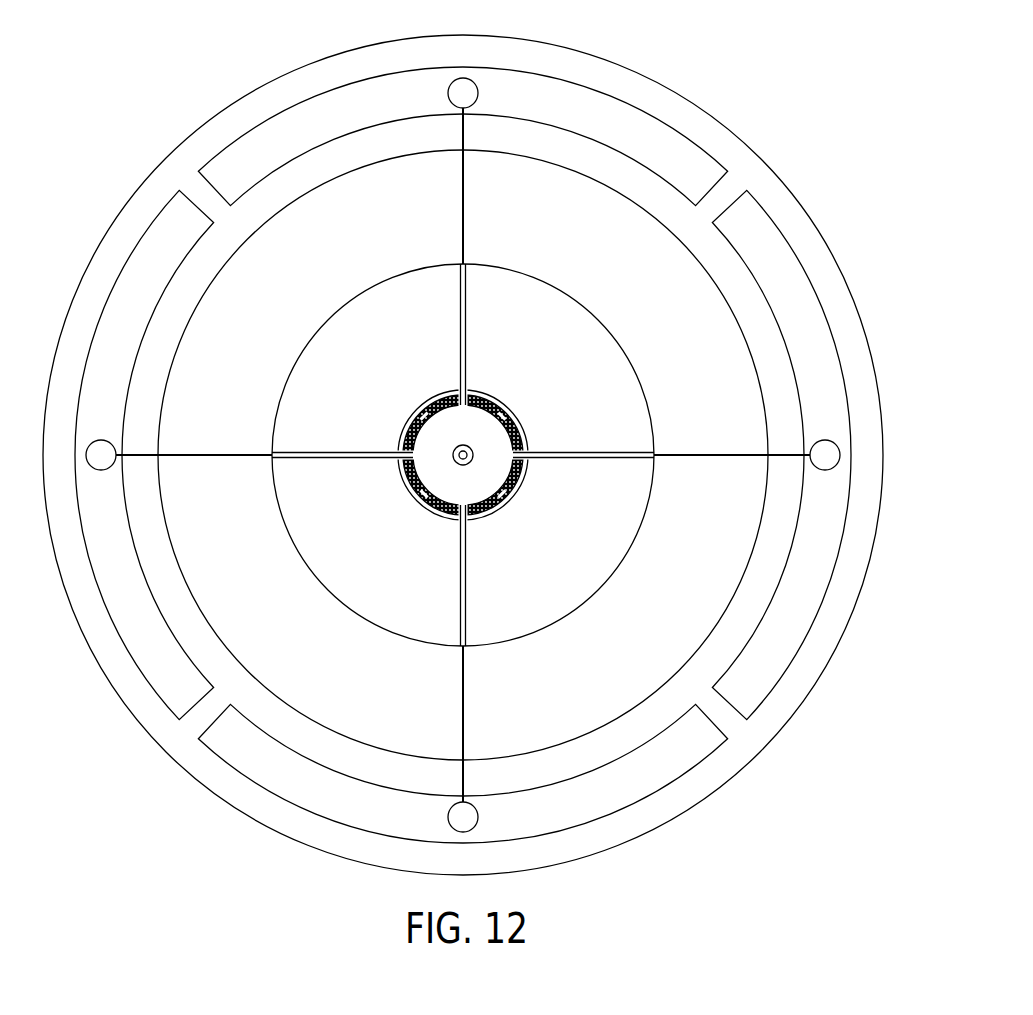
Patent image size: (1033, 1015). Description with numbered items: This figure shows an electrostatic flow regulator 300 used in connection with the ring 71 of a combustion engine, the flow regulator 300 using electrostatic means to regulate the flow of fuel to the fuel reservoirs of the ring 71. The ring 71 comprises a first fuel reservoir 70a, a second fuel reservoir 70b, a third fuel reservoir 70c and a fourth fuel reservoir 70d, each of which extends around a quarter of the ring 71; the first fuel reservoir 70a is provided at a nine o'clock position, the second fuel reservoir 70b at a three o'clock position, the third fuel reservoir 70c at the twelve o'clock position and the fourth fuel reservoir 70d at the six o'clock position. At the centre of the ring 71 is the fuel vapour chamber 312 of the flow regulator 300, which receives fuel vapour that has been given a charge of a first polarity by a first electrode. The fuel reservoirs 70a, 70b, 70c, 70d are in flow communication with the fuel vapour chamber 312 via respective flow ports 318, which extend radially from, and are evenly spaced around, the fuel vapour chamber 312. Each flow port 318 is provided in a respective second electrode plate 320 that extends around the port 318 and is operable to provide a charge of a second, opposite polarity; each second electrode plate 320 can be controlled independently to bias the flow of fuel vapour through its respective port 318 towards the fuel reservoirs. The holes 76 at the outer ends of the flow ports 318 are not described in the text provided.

The ring 71 is at (295, 88).
The first fuel reservoir 70a is at (153, 255).
The second fuel reservoir 70b is at (793, 308).
The third fuel reservoir 70c is at (635, 127).
The fourth fuel reservoir 70d is at (630, 793).
The holes with radial lines 76 is at (462, 217).
The flow regulator 300 is at (540, 280).
The fuel vapour chamber 312 is at (482, 483).
The flow ports 318 is at (467, 328).
The second electrode plates 320 is at (437, 400).